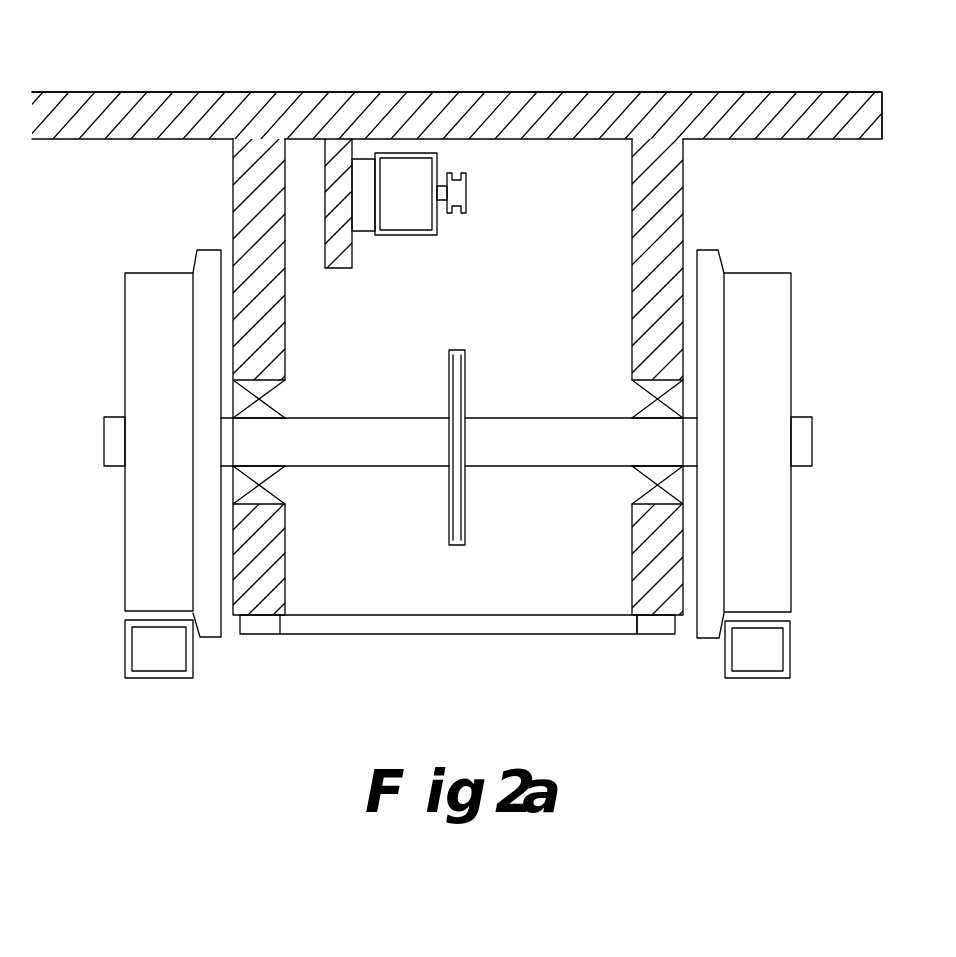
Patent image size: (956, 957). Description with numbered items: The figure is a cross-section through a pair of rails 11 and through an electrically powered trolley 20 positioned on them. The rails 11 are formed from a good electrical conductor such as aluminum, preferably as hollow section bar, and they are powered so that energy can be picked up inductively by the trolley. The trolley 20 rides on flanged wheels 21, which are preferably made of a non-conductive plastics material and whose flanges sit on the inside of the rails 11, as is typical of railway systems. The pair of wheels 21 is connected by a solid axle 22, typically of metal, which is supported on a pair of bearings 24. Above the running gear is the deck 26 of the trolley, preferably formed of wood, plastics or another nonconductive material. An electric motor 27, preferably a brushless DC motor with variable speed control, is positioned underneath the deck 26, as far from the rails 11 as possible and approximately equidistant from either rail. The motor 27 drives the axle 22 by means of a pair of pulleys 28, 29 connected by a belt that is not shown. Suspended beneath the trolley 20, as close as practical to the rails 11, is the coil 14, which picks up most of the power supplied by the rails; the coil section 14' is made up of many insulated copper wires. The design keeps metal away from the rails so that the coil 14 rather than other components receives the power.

The trolley 20 is at (883, 78).
The deck 26 is at (633, 92).
The electric motor 27 is at (386, 235).
The pulley 28 is at (466, 212).
The pulley 29 is at (466, 500).
The axle 22 is at (435, 466).
The bearings 24 is at (285, 397).
The wheels 21 is at (125, 590).
The rails 11 is at (125, 645).
The coil 14 is at (438, 655).
The coil 14' is at (623, 654).